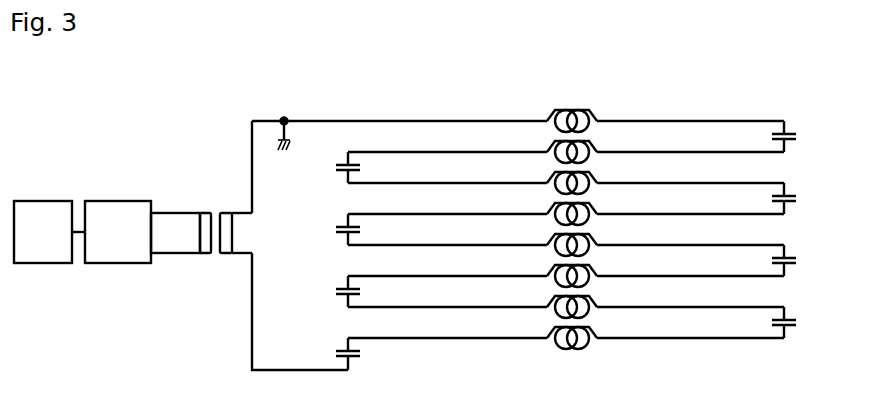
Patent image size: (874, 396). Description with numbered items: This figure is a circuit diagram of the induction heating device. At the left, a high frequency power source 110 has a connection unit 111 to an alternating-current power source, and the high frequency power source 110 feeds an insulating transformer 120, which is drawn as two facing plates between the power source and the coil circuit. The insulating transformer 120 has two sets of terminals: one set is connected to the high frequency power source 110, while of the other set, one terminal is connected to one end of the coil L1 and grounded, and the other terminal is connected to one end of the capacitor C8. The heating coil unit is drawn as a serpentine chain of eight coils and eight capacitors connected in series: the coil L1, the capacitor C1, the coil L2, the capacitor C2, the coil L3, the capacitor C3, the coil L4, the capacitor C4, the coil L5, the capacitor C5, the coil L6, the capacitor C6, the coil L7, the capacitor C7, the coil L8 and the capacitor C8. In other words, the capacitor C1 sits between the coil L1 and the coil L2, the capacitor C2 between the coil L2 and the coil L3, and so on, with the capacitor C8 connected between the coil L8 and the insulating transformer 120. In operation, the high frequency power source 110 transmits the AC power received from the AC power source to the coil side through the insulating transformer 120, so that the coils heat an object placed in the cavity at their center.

The connection unit 111 is at (35, 201).
The high frequency power source 110 is at (125, 264).
The insulating transformer 120 is at (223, 193).
The coil L1 is at (593, 115).
The coil L2 is at (593, 146).
The coil L3 is at (593, 177).
The coil L4 is at (593, 208).
The coil L5 is at (593, 239).
The coil L6 is at (593, 270).
The coil L7 is at (593, 301).
The coil L8 is at (593, 332).
The capacitor C1 is at (789, 130).
The capacitor C2 is at (343, 163).
The capacitor C3 is at (789, 192).
The capacitor C4 is at (343, 225).
The capacitor C5 is at (789, 254).
The capacitor C6 is at (343, 287).
The capacitor C7 is at (789, 316).
The capacitor C8 is at (343, 350).